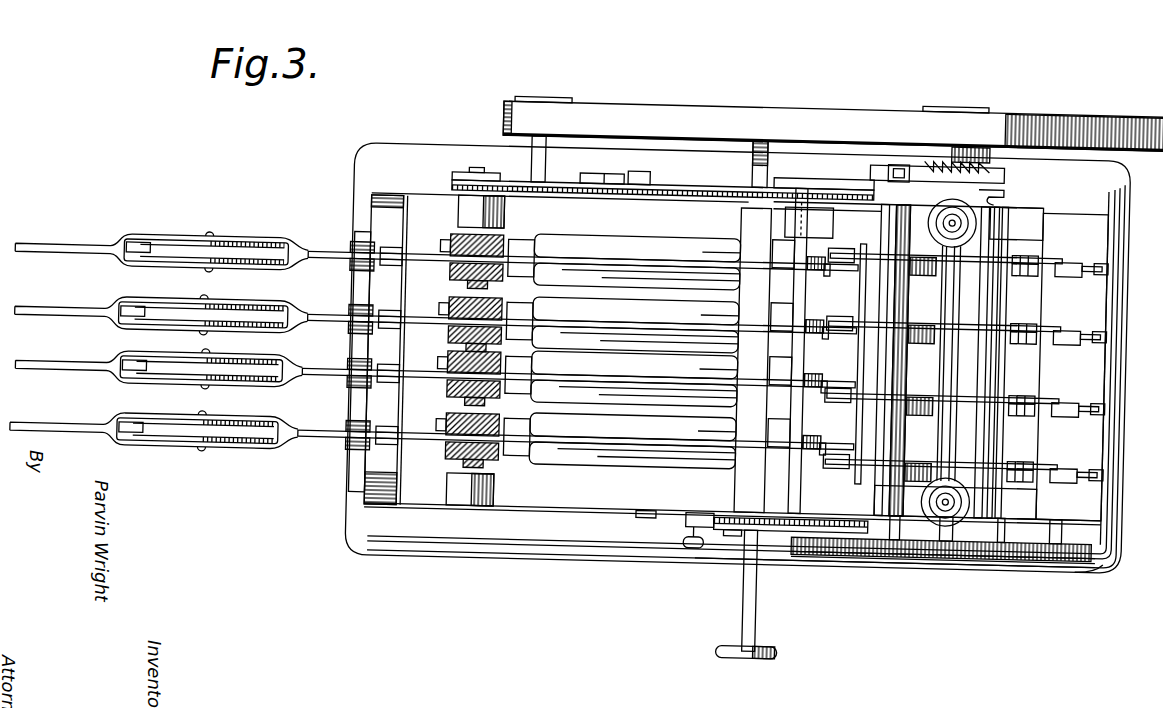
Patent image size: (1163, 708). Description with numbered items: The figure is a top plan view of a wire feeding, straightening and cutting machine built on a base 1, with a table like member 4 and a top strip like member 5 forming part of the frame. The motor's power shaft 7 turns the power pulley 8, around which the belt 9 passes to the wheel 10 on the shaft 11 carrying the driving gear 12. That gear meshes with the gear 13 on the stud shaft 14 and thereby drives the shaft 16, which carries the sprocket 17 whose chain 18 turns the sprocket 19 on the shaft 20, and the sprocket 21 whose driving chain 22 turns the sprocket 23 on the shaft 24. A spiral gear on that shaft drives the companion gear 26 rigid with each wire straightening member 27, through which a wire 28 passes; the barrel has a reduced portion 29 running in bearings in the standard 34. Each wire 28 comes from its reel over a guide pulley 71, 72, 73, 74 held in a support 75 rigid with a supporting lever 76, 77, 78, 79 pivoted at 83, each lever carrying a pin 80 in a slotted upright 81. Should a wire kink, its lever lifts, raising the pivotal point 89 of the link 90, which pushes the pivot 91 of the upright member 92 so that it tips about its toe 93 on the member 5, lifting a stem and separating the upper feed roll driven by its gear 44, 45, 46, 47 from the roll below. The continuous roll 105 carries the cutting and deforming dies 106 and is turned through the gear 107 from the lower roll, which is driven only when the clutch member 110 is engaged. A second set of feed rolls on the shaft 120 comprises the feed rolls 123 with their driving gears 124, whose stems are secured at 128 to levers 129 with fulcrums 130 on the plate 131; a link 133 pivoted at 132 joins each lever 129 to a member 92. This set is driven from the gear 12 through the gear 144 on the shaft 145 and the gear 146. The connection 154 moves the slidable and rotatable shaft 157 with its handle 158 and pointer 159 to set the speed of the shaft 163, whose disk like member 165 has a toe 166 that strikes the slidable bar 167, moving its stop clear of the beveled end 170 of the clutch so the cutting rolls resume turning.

The base 1 is at (352, 174).
The table like member 4 is at (420, 201).
The top strip like member 5 is at (870, 210).
The power shaft 7 is at (542, 166).
The power pulley 8 is at (552, 102).
The belt 9 is at (640, 106).
The wheel 10 is at (815, 106).
The shaft 11 is at (965, 101).
The driving gear 12 is at (925, 556).
The gear 13 is at (880, 556).
The stud shaft 14 is at (900, 536).
The shaft 16 is at (845, 184).
The sprocket 17 is at (830, 553).
The chain 18 is at (790, 531).
The sprocket 19 is at (735, 536).
The shaft 20 is at (745, 560).
The sprocket 21 is at (868, 182).
The driving chain 22 is at (512, 186).
The sprocket 23 is at (456, 184).
The shaft 24 is at (474, 173).
The companion gear 26 is at (448, 290).
The wire straightening member 27 is at (522, 245).
The wire 28 is at (133, 254).
The reduced portion 29 is at (782, 330).
The standard 34 is at (380, 201).
The gear 44 is at (815, 447).
The gear 45 is at (815, 385).
The gear 46 is at (814, 331).
The gear 47 is at (808, 256).
The guide pulley 71 is at (235, 255).
The guide pulley 72 is at (225, 330).
The guide pulley 73 is at (190, 375).
The guide pulley 74 is at (200, 440).
The support 75 is at (180, 272).
The supporting lever 76 is at (320, 260).
The supporting lever 77 is at (320, 324).
The supporting lever 78 is at (315, 378).
The supporting lever 79 is at (318, 440).
The pin 80 is at (388, 255).
The slotted upright 81 is at (390, 318).
The pivot 83 is at (804, 218).
The pivotal point 89 is at (590, 268).
The link 90 is at (680, 330).
The pivot 91 is at (832, 270).
The upright member 92 is at (845, 252).
The toe 93 is at (862, 262).
The continuous roll 105 is at (955, 332).
The cutting and deforming dies 106 is at (920, 320).
The gear 107 is at (985, 228).
The clutch member 110 is at (950, 152).
The shaft 120 is at (1045, 556).
The feed rolls 123 is at (1025, 270).
The driving gears 124 is at (1030, 254).
The securing point 128 is at (1060, 252).
The lever 129 is at (1085, 270).
The fulcrum 130 is at (1092, 256).
The plate 131 is at (1090, 222).
The pivot 132 is at (1066, 336).
The link 133 is at (938, 262).
The gear 144 is at (1030, 560).
The shaft 145 is at (1003, 560).
The gear 146 is at (1095, 560).
The connection 154 is at (762, 585).
The slidable and rotatable shaft 157 is at (763, 158).
The handle 158 is at (770, 657).
The pointer 159 is at (690, 521).
The shaft 163 is at (648, 175).
The disk like member 165 is at (598, 176).
The toe 166 is at (628, 180).
The slidable bar 167 is at (852, 182).
The beveled end 170 is at (990, 190).